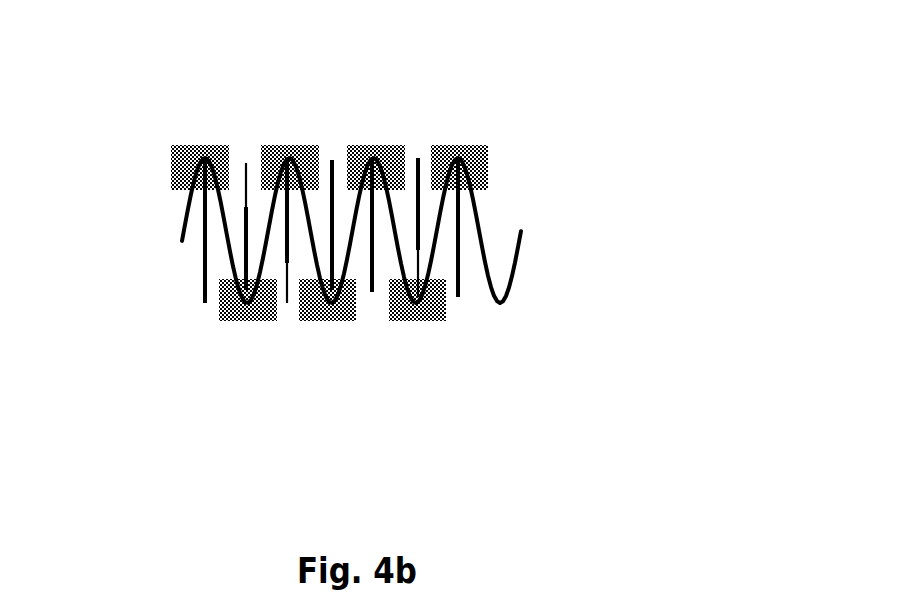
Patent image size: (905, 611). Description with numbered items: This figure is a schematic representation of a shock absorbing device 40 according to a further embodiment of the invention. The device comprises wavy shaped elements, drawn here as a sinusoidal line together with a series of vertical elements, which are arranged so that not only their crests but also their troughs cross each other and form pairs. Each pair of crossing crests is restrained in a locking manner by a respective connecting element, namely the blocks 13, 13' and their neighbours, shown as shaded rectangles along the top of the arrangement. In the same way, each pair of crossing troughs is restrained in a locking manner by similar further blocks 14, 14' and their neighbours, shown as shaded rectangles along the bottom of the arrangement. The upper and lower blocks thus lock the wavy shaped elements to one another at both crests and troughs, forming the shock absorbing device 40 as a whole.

The block 13 is at (138, 131).
The block 13' is at (330, 131).
The further block 14 is at (217, 362).
The further block 14' is at (331, 360).
The shock absorbing device 40 is at (643, 162).